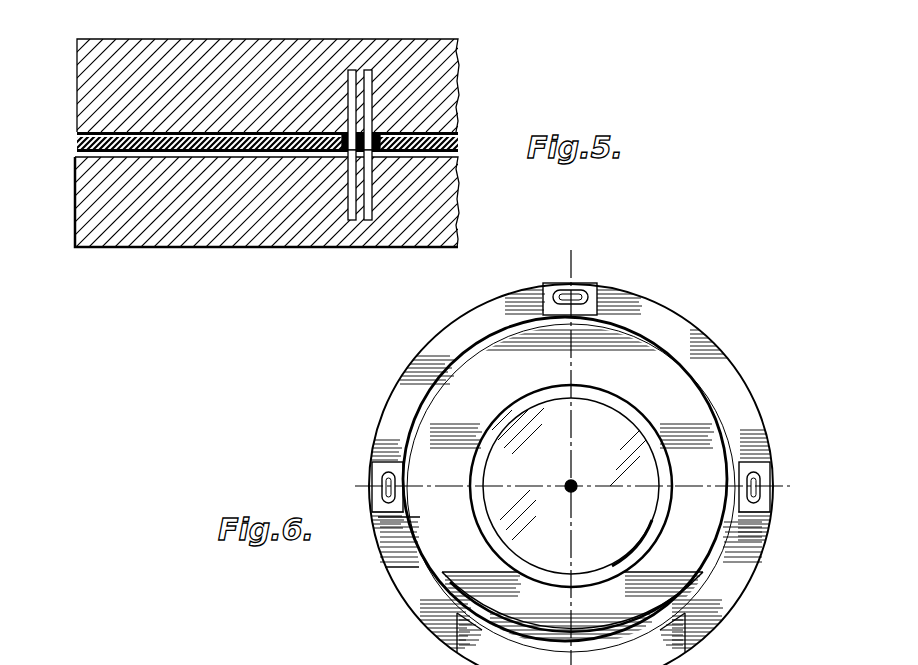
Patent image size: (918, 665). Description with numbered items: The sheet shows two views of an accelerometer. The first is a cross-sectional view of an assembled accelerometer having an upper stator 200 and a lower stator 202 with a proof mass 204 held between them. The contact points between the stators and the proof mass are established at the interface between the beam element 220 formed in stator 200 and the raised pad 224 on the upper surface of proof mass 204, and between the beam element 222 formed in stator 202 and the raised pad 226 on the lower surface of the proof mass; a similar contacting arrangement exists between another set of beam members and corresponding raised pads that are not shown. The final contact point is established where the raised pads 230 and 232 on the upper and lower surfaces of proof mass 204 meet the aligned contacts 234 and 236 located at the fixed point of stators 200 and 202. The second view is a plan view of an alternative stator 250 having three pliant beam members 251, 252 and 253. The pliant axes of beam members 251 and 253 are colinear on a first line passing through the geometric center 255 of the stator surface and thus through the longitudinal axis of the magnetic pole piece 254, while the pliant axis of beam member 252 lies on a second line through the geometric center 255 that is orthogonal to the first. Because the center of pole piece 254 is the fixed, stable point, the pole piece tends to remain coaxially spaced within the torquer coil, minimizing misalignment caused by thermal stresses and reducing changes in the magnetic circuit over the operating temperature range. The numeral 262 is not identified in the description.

In FIG. 5, the stator 200 is at (422, 50).
In FIG. 5, the stator 202 is at (407, 252).
In FIG. 5, the proof mass 204 is at (83, 145).
In FIG. 5, the beam element 220 is at (360, 78).
In FIG. 5, the beam element 222 is at (358, 198).
In FIG. 5, the raised pad 224 is at (372, 137).
In FIG. 5, the raised pad 226 is at (341, 152).
In FIG. 5, the raised pad 230 is at (95, 132).
In FIG. 5, the raised pad 232 is at (95, 157).
In FIG. 5, the contact 234 is at (84, 132).
In FIG. 5, the contact 236 is at (82, 158).
In FIG. 6, the stator 250 is at (713, 340).
In FIG. 6, the pliant beam member 251 is at (378, 480).
In FIG. 6, the pliant beam member 252 is at (583, 290).
In FIG. 6, the pliant beam member 253 is at (762, 491).
In FIG. 6, the magnetic pole piece 254 is at (638, 460).
In FIG. 6, the geometric center 255 is at (565, 480).
In FIG. 6, the arcuate pocket 262 is at (304, 654).